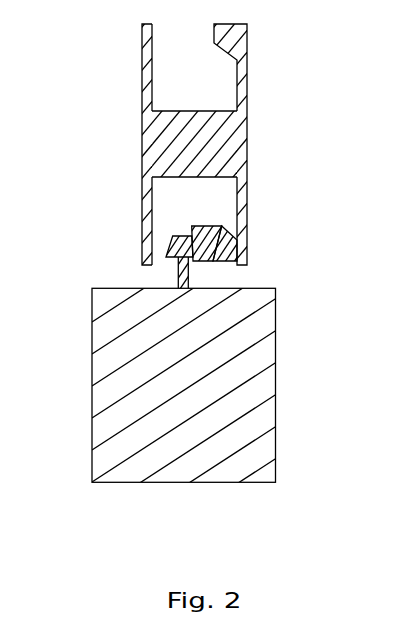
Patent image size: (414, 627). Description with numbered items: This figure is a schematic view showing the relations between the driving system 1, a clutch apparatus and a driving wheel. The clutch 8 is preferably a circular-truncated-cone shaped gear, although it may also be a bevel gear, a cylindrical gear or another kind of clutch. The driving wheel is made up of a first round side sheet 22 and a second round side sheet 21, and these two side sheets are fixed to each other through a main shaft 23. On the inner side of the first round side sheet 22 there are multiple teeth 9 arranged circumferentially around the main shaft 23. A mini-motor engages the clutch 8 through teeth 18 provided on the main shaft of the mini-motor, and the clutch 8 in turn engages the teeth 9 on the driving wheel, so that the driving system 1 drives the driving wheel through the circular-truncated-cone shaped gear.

The driving system 1 is at (276, 401).
The clutch 8 is at (221, 226).
The teeth 9 is at (226, 249).
The teeth 18 is at (166, 250).
The second round side sheet 21 is at (142, 82).
The first round side sheet 22 is at (247, 82).
The main shaft 23 is at (187, 111).